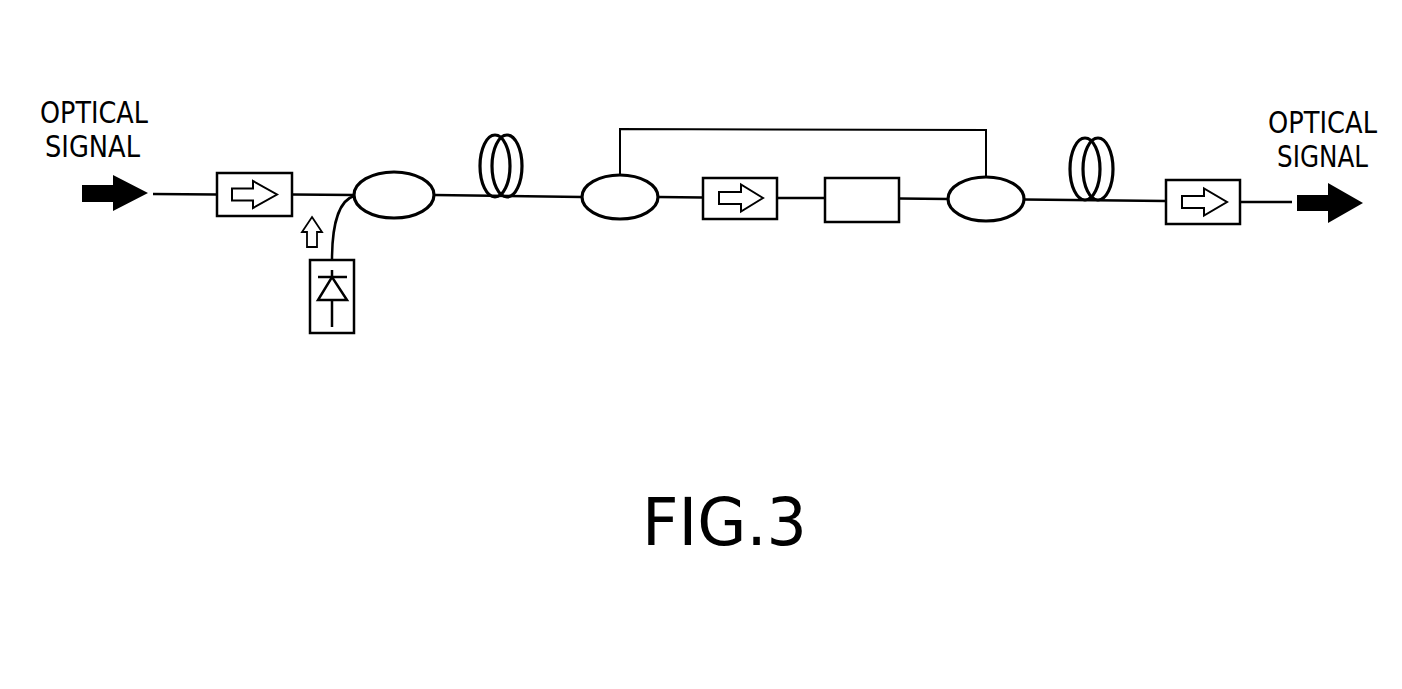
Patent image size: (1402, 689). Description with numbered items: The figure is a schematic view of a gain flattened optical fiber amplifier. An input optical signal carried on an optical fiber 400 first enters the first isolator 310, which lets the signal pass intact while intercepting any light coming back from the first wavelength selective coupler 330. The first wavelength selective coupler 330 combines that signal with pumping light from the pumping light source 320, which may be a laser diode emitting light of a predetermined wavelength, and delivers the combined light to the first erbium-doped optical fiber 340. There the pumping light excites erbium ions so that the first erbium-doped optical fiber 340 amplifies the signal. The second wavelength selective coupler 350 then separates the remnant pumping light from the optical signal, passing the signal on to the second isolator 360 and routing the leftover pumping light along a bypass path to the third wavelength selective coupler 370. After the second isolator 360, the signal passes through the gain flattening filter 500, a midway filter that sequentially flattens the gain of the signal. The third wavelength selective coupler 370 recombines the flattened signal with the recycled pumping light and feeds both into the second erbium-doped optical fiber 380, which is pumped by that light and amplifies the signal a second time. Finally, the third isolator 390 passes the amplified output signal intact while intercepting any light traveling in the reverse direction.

The first isolator 310 is at (251, 172).
The pumping light source 320 is at (354, 295).
The first wavelength selective coupler 330 is at (392, 172).
The first erbium-doped optical fiber 340 is at (498, 135).
The second wavelength selective coupler 350 is at (620, 221).
The second isolator 360 is at (740, 220).
The third wavelength selective coupler 370 is at (986, 222).
The second erbium-doped optical fiber 380 is at (1090, 140).
The third isolator 390 is at (1203, 180).
The optical fiber 400 is at (184, 191).
The gain flattening filter 500 is at (862, 222).